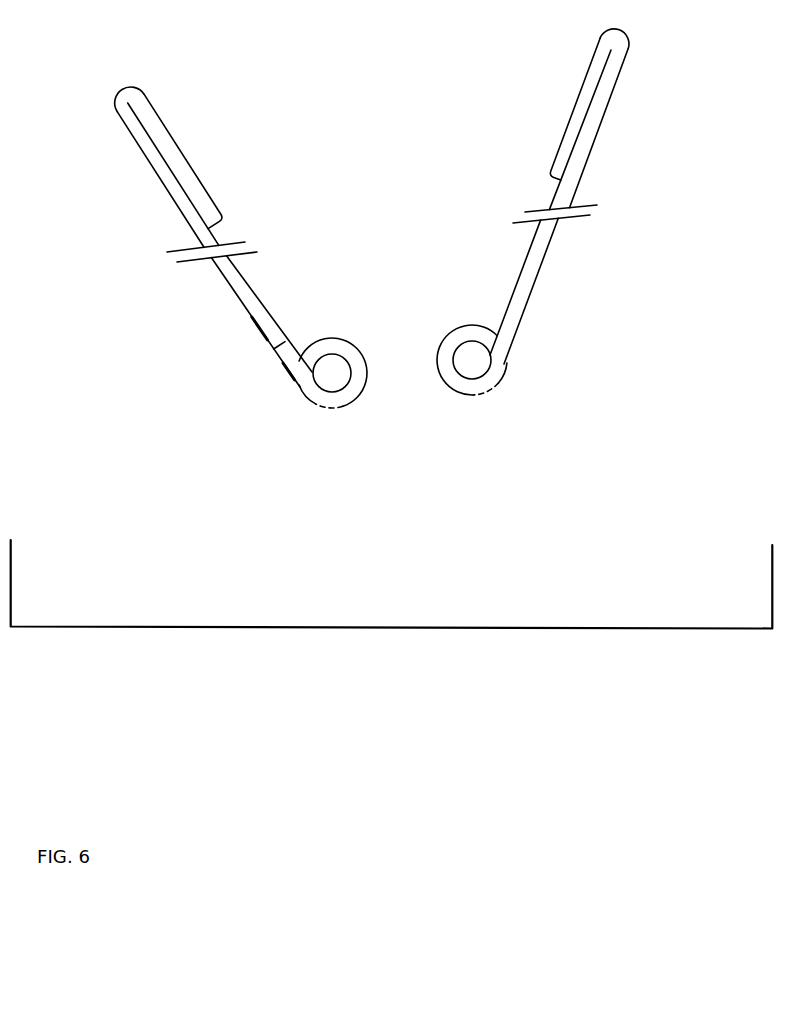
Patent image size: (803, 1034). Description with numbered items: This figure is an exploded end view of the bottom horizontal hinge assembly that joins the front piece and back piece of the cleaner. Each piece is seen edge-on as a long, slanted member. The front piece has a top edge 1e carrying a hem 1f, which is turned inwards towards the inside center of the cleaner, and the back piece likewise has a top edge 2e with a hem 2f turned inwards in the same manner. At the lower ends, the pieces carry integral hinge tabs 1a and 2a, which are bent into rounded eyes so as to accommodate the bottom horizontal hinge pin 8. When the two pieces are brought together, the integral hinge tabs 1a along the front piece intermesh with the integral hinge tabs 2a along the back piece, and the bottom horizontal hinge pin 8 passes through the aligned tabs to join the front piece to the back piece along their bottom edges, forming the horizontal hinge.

The top edge 1e is at (116, 90).
The hem 1f is at (168, 132).
The integral hinge tabs 1a is at (350, 393).
The top edge 2e is at (616, 27).
The hem 2f is at (568, 117).
The integral hinge tabs 2a is at (457, 393).
The bottom horizontal hinge pin 8 is at (334, 375).